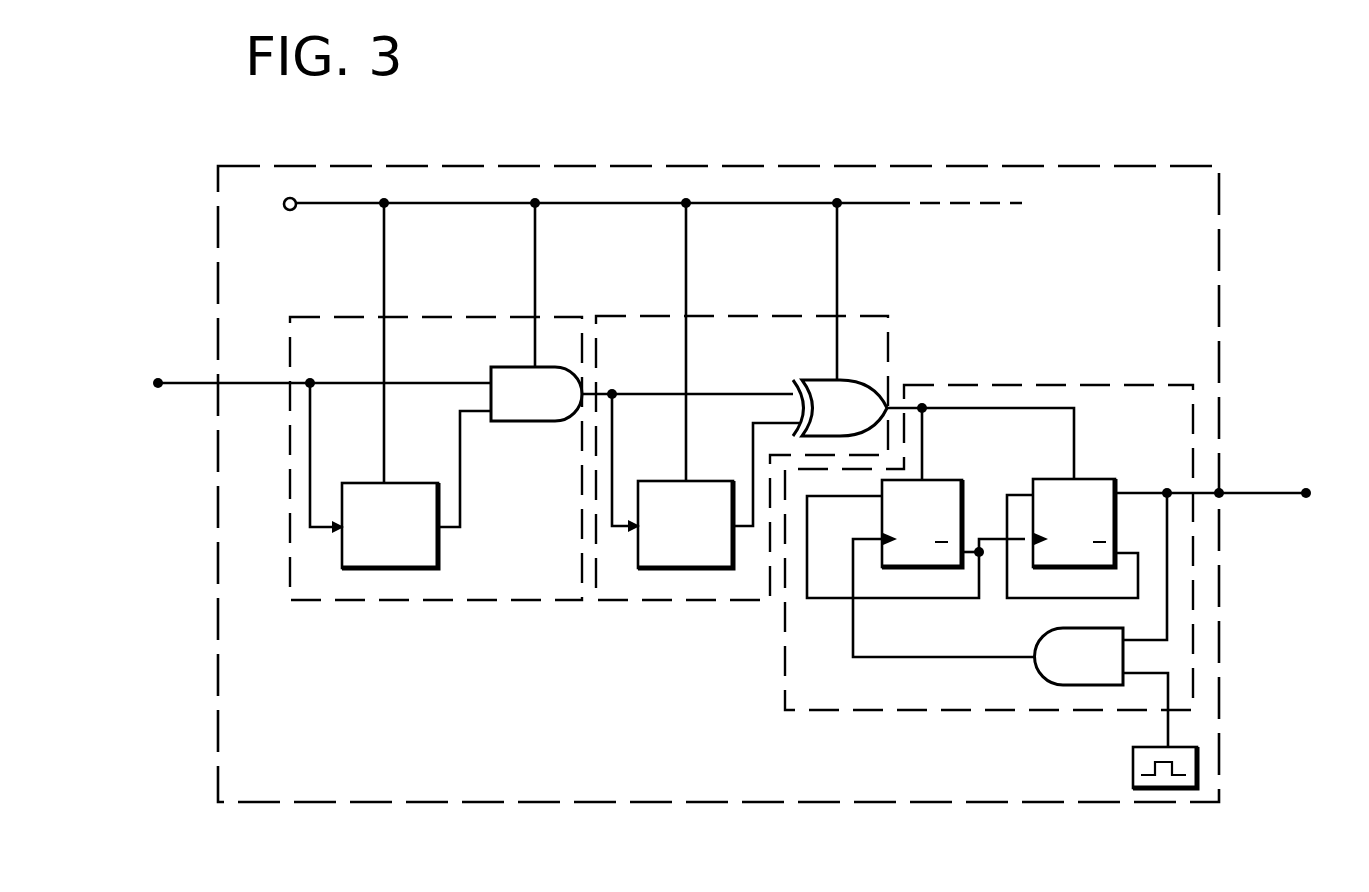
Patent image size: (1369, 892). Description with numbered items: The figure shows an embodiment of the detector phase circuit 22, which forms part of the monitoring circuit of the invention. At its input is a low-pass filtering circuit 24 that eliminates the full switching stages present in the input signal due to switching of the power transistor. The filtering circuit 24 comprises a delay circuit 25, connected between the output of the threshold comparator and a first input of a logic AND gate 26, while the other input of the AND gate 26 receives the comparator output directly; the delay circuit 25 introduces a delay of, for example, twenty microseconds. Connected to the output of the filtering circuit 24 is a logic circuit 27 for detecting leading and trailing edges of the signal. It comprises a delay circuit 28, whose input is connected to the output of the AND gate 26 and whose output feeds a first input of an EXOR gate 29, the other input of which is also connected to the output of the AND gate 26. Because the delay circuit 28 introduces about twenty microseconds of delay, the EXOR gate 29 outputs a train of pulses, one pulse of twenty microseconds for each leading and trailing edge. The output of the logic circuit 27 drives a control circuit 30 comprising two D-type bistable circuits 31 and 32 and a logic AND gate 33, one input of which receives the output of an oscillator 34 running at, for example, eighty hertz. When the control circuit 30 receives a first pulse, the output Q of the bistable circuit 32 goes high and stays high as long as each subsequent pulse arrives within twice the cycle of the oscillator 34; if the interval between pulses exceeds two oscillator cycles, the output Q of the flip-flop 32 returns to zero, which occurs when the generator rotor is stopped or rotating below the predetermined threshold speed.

The detector phase circuit 22 is at (810, 165).
The low-pass filtering circuit 24 is at (330, 317).
The delay circuit 25 is at (440, 546).
The logic AND gate 26 is at (556, 409).
The logic circuit 27 is at (723, 315).
The delay circuit 28 is at (708, 555).
The EXOR gate 29 is at (821, 386).
The control circuit 30 is at (1042, 385).
The bistable circuit 31 is at (945, 493).
The bistable circuit 32 is at (1095, 485).
The logic AND gate 33 is at (1046, 660).
The oscillator 34 is at (1133, 758).